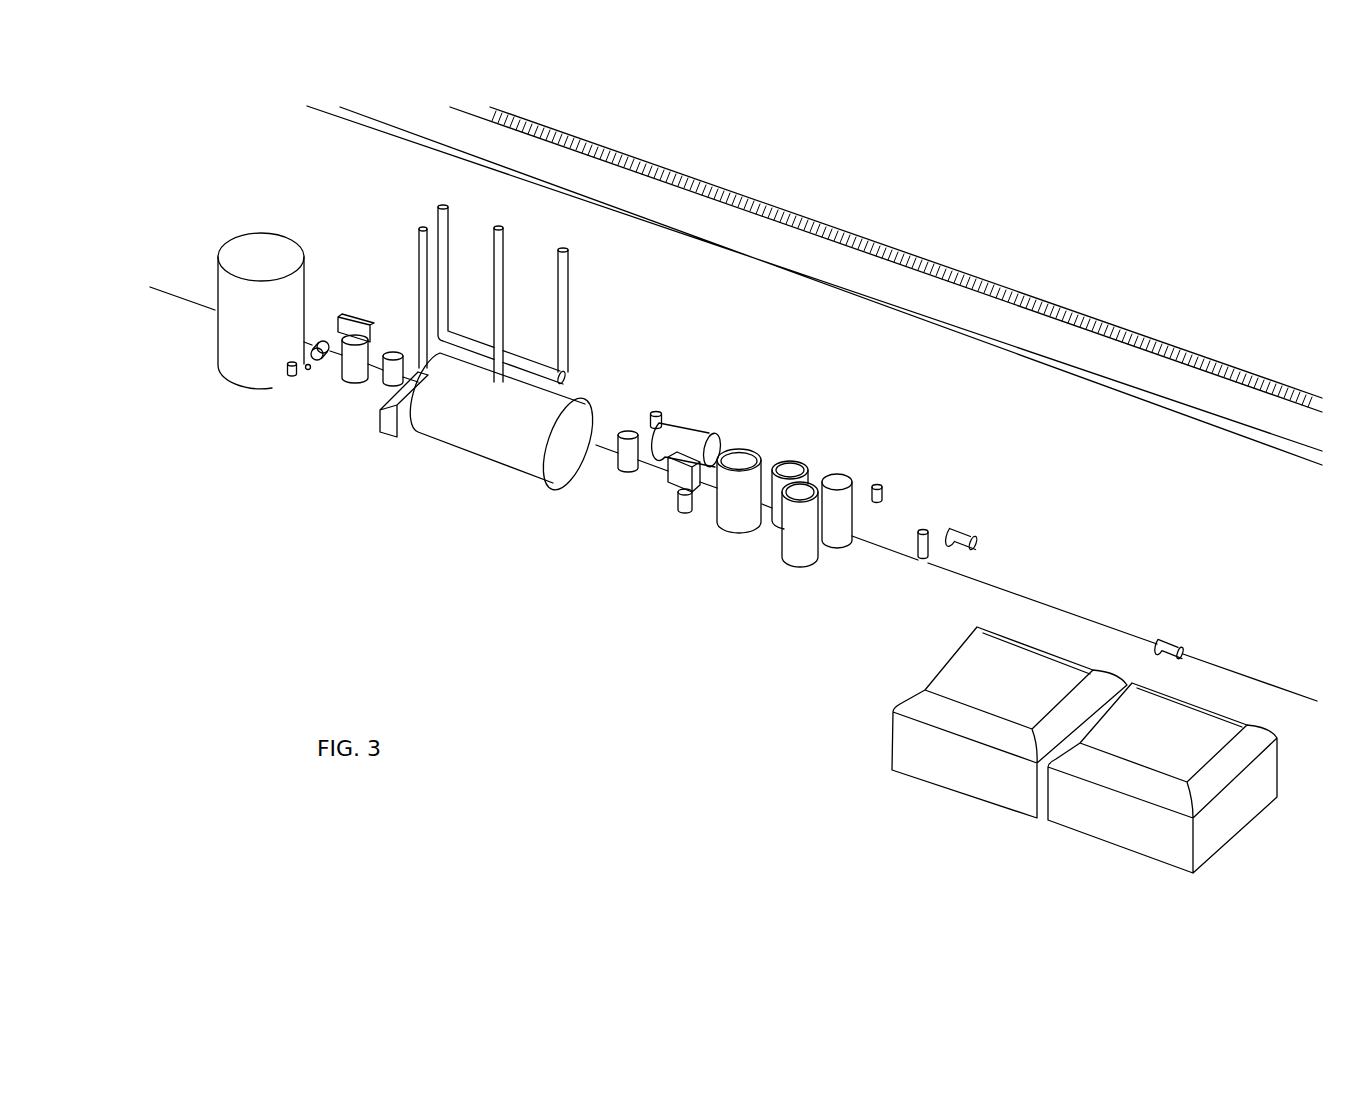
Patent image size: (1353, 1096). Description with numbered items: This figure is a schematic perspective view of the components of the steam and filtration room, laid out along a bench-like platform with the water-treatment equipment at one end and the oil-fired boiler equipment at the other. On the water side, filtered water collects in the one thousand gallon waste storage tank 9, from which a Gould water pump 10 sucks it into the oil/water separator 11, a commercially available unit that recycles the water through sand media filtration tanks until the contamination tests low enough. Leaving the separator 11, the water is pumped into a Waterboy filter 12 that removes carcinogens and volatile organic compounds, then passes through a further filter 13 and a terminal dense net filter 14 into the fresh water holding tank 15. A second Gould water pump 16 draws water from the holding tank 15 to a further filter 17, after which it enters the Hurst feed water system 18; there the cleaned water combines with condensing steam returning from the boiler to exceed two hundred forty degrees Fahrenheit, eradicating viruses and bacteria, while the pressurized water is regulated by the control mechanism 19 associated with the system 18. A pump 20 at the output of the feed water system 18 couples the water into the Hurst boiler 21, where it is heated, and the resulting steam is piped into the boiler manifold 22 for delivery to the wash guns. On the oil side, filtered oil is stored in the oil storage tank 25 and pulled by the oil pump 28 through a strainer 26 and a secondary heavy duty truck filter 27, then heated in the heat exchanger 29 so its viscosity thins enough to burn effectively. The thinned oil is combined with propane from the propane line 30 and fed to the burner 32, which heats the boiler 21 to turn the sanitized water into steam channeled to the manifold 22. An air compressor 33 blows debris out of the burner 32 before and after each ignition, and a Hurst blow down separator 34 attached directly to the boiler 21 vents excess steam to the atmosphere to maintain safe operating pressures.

The waste storage tank 9 is at (1162, 778).
The pump 10 is at (736, 403).
The separator 11 is at (745, 510).
The filter 12 is at (836, 473).
The filter 13 is at (876, 484).
The terminal dense net filter 14 is at (923, 529).
The fresh water holding tank 15 is at (1009, 722).
The second water pump 16 is at (963, 537).
The filter 17 is at (657, 411).
The feed water system 18 is at (697, 437).
The control mechanism 19 is at (680, 474).
The pump 20 is at (687, 506).
The boiler 21 is at (506, 424).
The boiler manifold 22 is at (568, 313).
The oil storage tank 25 is at (261, 311).
The strainer 26 is at (290, 374).
The secondary filter 27 is at (309, 374).
The oil pump 28 is at (320, 343).
The heat exchanger 29 is at (397, 353).
The propane line 30 is at (423, 229).
The burner 32 is at (385, 432).
The air compressor 33 is at (353, 368).
The blow down separator 34 is at (622, 463).